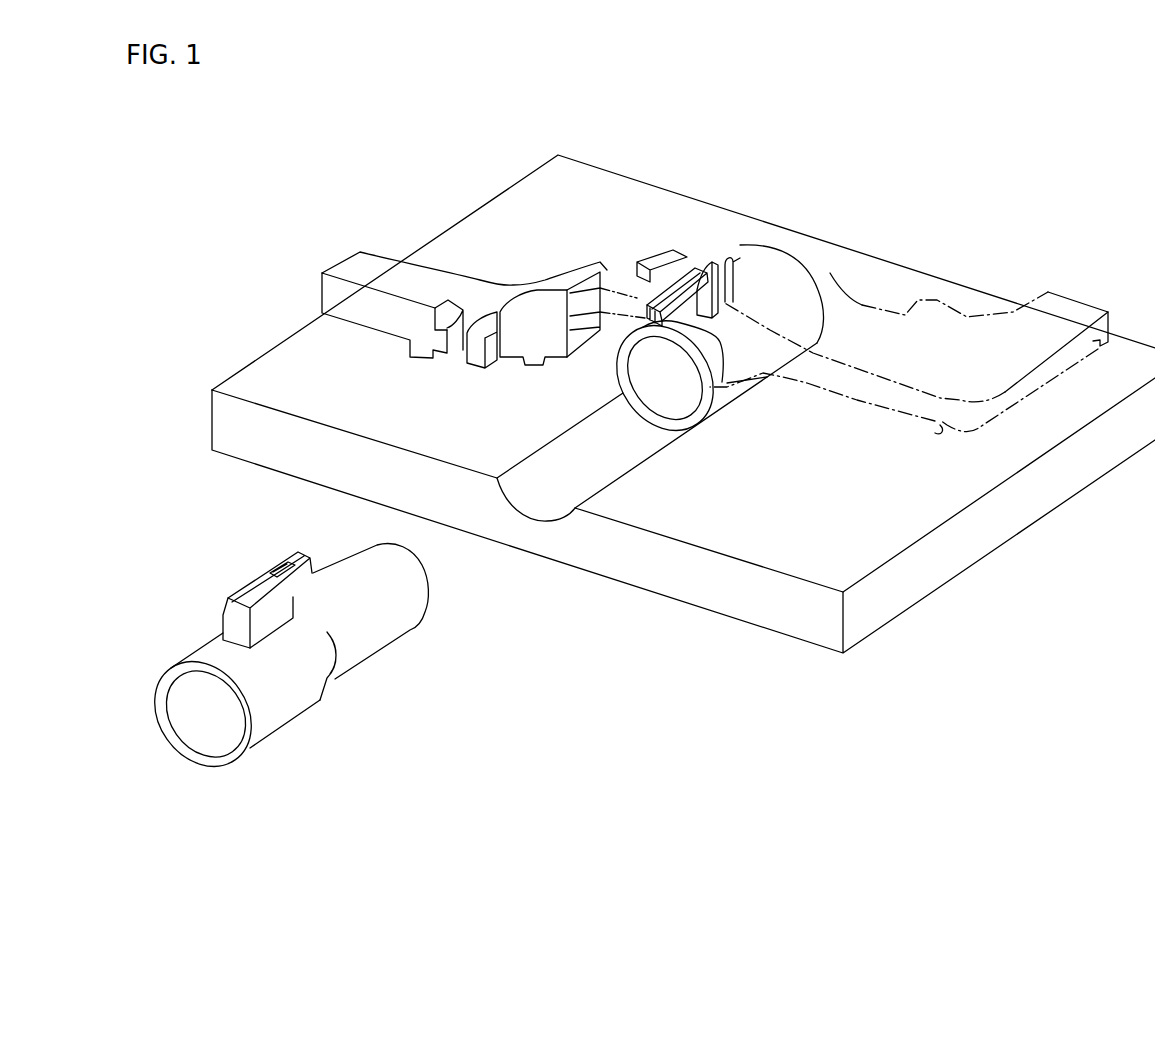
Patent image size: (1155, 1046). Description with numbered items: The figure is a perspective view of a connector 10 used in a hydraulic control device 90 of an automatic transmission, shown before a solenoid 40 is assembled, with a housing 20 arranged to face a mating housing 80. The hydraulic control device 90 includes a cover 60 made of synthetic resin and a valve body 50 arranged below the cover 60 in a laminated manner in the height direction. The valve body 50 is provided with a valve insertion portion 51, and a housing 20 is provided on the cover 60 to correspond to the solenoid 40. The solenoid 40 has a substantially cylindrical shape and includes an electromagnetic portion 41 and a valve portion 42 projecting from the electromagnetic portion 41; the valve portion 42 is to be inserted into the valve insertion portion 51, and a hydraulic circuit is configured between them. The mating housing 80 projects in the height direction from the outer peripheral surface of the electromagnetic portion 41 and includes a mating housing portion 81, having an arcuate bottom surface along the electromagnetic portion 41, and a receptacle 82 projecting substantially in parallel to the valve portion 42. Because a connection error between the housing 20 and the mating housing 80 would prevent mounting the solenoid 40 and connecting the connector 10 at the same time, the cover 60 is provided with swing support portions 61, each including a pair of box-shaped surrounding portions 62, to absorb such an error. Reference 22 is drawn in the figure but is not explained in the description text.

The connector 10 is at (710, 282).
The housing 20 is at (698, 272).
The terminal 22 is at (647, 312).
The solenoid 40 is at (282, 651).
The electromagnetic portion 41 is at (282, 712).
The valve portion 42 is at (384, 628).
The valve body 50 is at (291, 345).
The valve insertion portion 51 is at (808, 282).
The cover 60 is at (568, 260).
The swing support portion 61 is at (499, 328).
The surrounding portion 62 is at (731, 290).
The mating housing 80 is at (271, 580).
The mating housing portion 81 is at (232, 620).
The receptacle 82 is at (316, 575).
The hydraulic control device 90 is at (523, 131).